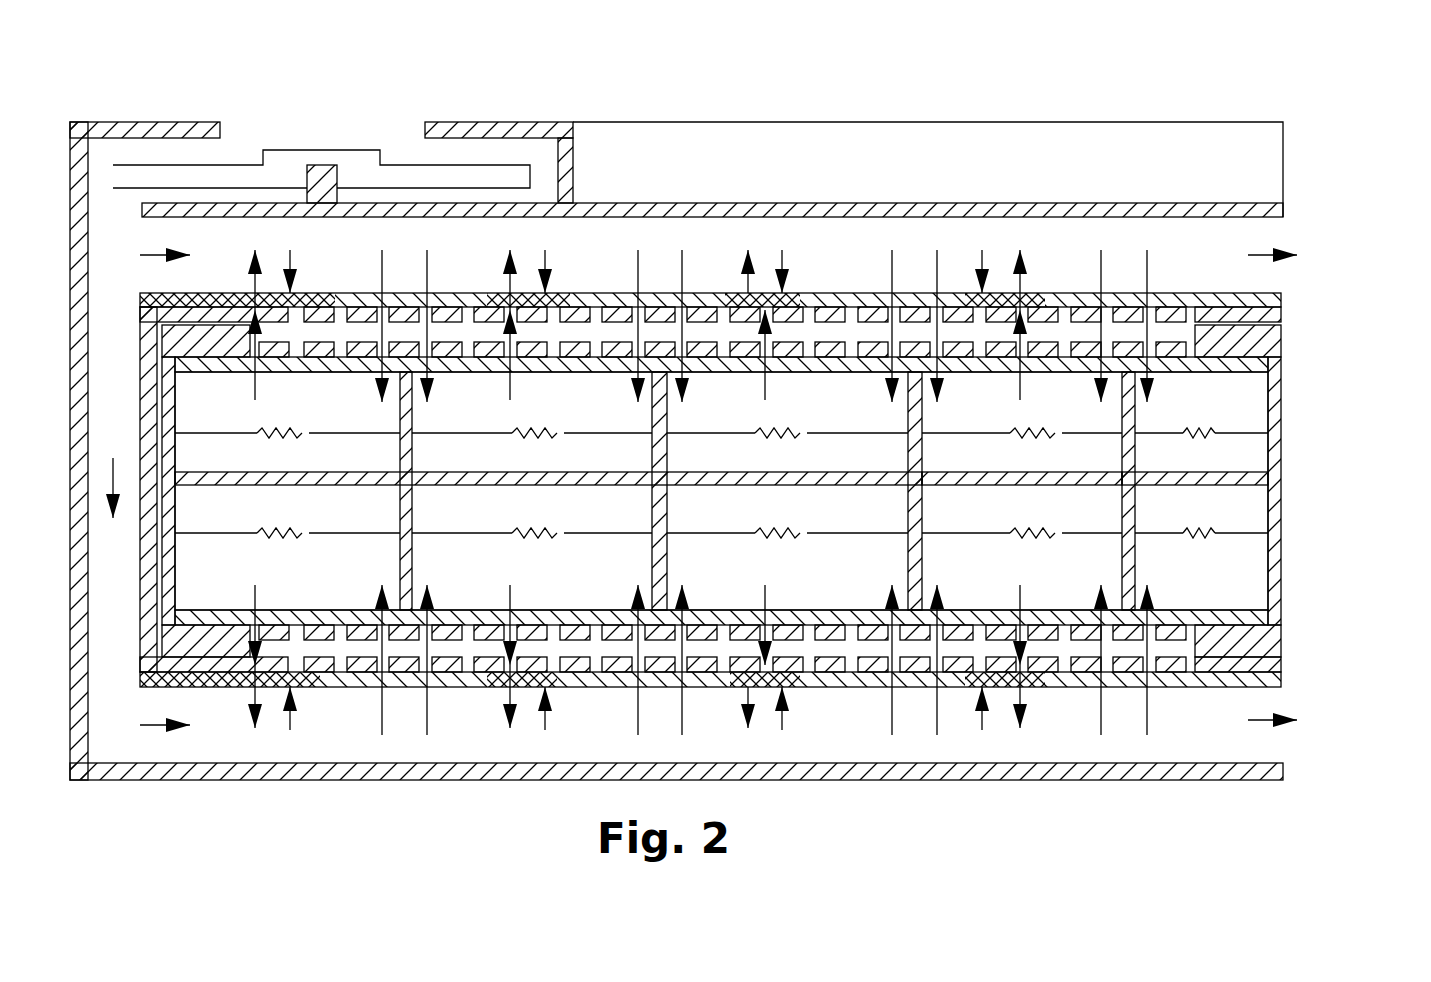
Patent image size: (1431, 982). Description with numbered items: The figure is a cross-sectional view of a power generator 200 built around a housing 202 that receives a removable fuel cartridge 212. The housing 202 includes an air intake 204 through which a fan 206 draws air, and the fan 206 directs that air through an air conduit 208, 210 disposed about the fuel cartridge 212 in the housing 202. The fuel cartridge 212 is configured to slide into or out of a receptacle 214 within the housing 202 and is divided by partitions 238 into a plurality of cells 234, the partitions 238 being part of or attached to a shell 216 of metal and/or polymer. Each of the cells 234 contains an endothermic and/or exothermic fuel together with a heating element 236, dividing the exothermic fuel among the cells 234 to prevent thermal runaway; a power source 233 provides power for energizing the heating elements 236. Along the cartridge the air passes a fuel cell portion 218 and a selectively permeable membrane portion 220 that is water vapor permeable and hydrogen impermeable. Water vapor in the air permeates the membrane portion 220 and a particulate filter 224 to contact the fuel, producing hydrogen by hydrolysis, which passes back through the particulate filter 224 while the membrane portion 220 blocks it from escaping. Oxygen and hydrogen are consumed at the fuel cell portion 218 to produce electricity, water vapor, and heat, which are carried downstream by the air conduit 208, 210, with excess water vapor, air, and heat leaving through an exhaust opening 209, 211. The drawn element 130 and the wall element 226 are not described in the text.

The power generator 200 is at (1182, 48).
The housing 202 is at (205, 122).
The air intake 204 is at (316, 130).
The fan 206 is at (366, 150).
The air conduit 208 is at (192, 276).
The exhaust opening 209 is at (1286, 228).
The air conduit 210 is at (194, 712).
The exhaust opening 211 is at (1283, 752).
The removable fuel cartridge 212 is at (1308, 568).
The receptacle 214 is at (1283, 314).
The shell 216 is at (1283, 340).
The fuel cell portion 218 is at (326, 293).
The selectively permeable membrane portion 220 is at (473, 293).
The particulate filter 224 is at (1282, 366).
The inner housing wall 226 is at (162, 308).
The power source 233 is at (1268, 164).
The cells 234 is at (241, 463).
The heating element 236 is at (347, 432).
The partitions 238 is at (652, 447).
The hydrogen storage unit 130 is at (1072, 475).